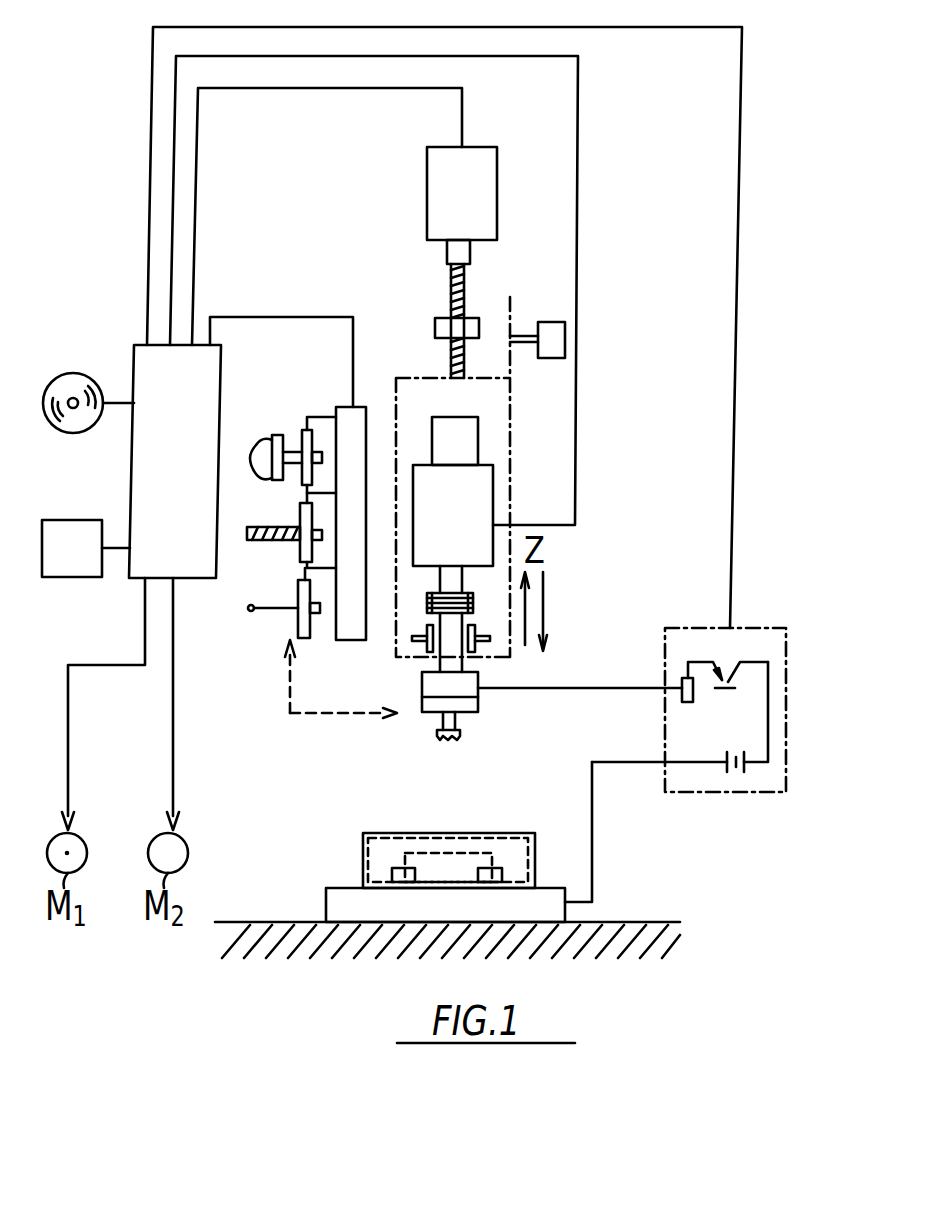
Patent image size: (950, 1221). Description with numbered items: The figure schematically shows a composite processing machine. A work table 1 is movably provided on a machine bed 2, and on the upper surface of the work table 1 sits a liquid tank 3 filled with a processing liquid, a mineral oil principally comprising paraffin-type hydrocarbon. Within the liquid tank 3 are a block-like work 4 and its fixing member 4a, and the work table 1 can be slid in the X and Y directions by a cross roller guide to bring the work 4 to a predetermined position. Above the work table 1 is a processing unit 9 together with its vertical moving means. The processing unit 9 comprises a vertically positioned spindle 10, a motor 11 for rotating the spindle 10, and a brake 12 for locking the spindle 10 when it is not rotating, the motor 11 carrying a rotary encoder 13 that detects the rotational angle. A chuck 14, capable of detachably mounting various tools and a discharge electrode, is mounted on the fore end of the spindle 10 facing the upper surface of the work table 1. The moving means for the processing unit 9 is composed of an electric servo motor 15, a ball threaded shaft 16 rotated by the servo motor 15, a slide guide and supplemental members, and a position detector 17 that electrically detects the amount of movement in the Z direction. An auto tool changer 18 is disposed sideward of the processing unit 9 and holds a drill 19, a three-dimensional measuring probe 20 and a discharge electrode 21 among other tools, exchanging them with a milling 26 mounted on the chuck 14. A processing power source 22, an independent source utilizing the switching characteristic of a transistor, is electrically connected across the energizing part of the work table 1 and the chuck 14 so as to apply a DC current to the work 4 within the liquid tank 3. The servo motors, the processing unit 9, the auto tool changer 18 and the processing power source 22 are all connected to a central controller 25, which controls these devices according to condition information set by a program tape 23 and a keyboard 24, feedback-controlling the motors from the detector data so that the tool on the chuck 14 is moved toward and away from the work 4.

The work table 1 is at (350, 895).
The machine bed 2 is at (626, 920).
The liquid tank 3 is at (398, 845).
The work 4 is at (432, 855).
The fixing member 4a is at (500, 870).
The processing unit 9 is at (505, 455).
The spindle 10 is at (447, 643).
The motor 11 is at (483, 507).
The brake 12 is at (477, 645).
The rotary encoder 13 is at (465, 430).
The chuck 14 is at (475, 705).
The servo motor 15 is at (489, 200).
The ball threaded shaft 16 is at (450, 293).
The position detector 17 is at (560, 335).
The auto tool changer 18 is at (345, 420).
The drill 19 is at (263, 527).
The three-dimensional measuring probe 20 is at (265, 607).
The discharge electrode 21 is at (263, 450).
The processing power source 22 is at (782, 680).
The program tape 23 is at (72, 380).
The keyboard 24 is at (72, 528).
The central controller 25 is at (200, 468).
The milling 26 is at (450, 742).